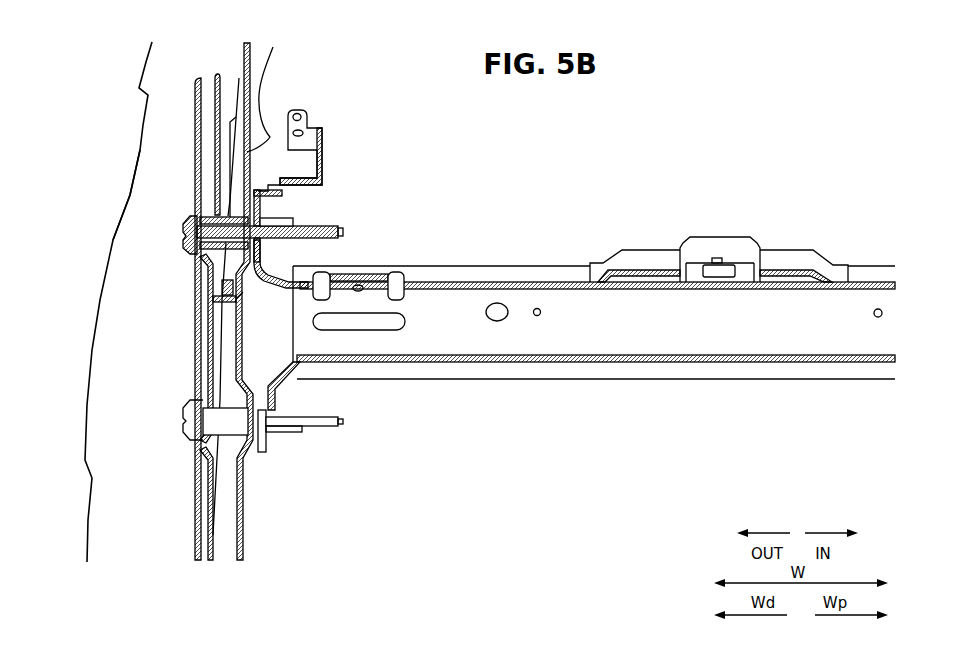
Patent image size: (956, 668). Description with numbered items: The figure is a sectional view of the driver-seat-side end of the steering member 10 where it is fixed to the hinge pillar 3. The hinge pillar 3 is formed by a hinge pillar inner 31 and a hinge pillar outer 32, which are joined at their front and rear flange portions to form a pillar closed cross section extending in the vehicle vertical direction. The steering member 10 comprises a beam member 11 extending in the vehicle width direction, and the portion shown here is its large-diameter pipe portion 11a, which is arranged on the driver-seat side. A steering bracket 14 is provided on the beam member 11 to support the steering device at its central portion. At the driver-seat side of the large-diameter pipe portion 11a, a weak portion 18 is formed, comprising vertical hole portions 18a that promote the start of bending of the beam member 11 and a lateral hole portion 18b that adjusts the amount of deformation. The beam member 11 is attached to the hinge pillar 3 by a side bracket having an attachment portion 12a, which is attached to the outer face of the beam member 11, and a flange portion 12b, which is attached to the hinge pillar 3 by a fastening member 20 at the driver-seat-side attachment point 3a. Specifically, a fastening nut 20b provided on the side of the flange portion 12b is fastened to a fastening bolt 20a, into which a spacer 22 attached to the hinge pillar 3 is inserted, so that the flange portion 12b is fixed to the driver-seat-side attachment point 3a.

The hinge pillar 3 is at (122, 67).
The driver-seat-side attachment point 3a is at (190, 350).
The hinge pillar outer 32 is at (160, 127).
The hinge pillar inner 31 is at (268, 72).
The steering member 10 is at (742, 214).
The beam member 11 is at (498, 264).
The large-diameter pipe portion 11a is at (594, 302).
The attachment portion 12a is at (294, 382).
The flange portion 12b is at (268, 256).
The steering bracket 14 is at (646, 250).
The weak portion 18 is at (420, 213).
The vertical hole portions 18a is at (322, 288).
The lateral hole portion 18b is at (404, 317).
The fastening member 20 is at (370, 173).
The fastening bolt 20a is at (318, 225).
The fastening nut 20b is at (284, 203).
The spacer 22 is at (203, 198).